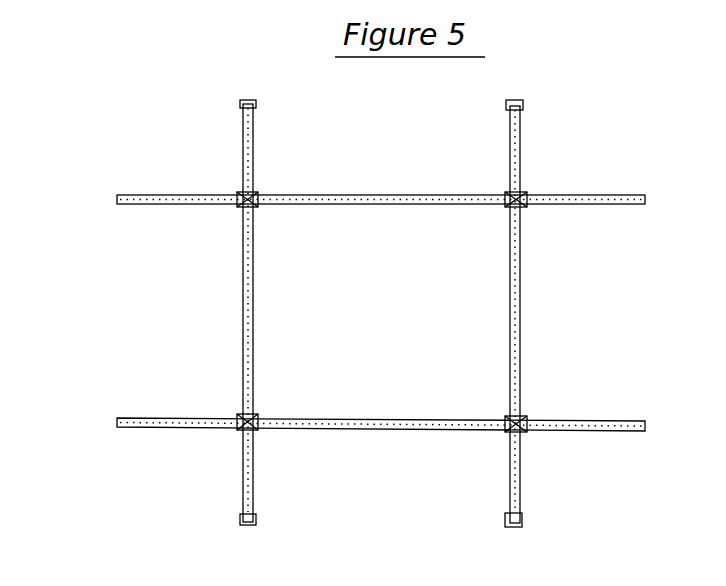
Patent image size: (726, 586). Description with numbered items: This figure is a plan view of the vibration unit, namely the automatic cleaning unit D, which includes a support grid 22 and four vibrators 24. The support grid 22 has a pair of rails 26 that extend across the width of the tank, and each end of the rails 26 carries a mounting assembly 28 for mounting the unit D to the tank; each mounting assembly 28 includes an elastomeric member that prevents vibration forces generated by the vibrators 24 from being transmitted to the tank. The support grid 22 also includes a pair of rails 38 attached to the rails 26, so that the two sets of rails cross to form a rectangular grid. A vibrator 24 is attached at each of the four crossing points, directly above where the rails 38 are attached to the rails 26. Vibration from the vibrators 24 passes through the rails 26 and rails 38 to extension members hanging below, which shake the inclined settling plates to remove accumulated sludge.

The support grid 22 is at (357, 192).
The vibrator 24 is at (260, 208).
The rails 26 is at (255, 313).
The mounting assembly 28 is at (528, 515).
The rails 38 is at (637, 182).
The automatic cleaning unit D is at (582, 148).